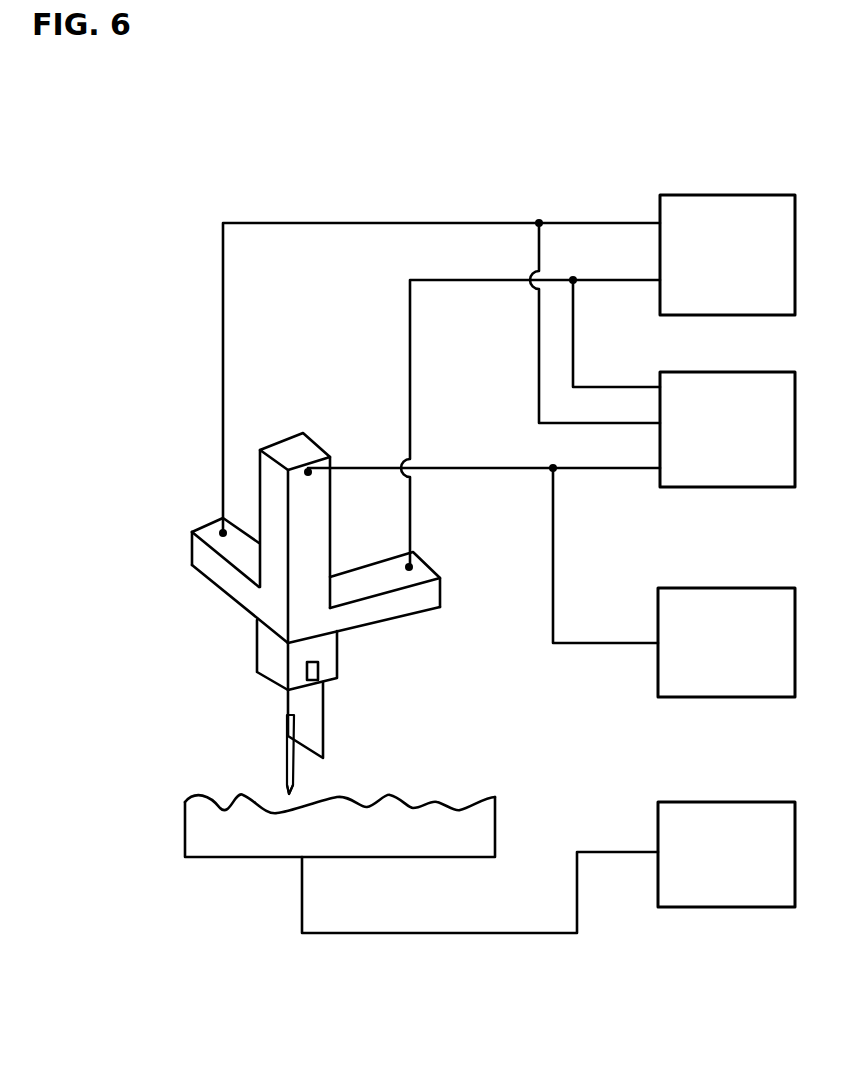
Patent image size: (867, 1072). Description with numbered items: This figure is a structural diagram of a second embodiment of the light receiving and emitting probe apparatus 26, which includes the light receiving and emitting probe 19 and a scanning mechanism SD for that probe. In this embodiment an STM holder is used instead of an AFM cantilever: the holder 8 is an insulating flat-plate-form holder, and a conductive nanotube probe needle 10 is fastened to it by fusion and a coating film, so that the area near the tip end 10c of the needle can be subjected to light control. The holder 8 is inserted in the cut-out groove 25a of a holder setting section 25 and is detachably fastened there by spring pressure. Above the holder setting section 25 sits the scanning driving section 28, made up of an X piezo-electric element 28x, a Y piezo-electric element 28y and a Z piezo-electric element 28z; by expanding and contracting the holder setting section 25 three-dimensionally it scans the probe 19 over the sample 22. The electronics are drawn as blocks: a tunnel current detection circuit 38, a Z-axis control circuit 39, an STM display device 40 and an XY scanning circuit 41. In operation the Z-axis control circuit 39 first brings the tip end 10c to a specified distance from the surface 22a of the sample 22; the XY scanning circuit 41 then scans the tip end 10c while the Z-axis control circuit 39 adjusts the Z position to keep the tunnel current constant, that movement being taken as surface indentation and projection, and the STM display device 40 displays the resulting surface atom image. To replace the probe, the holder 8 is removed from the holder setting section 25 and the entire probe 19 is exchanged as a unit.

The light receiving and emitting probe apparatus 26 is at (387, 173).
The XY scanning circuit 41 is at (727, 255).
The STM display device 40 is at (727, 429).
The Z-axis control circuit 39 is at (726, 642).
The tunnel current detection circuit 38 is at (726, 854).
The scanning mechanism SD is at (725, 535).
The scanning driving section 28 is at (288, 432).
The X piezo-electric element 28x is at (417, 599).
The Y piezo-electric element 28y is at (203, 553).
The Z piezo-electric element 28z is at (300, 456).
The holder setting section 25 is at (267, 646).
The cut-out groove 25a is at (318, 672).
The light receiving and emitting probe 19 is at (177, 745).
The holder 8 is at (274, 703).
The conductive nanotube probe needle 10 is at (275, 744).
The tip end 10c is at (285, 792).
The sample 22 is at (260, 840).
The surface 22a is at (350, 802).